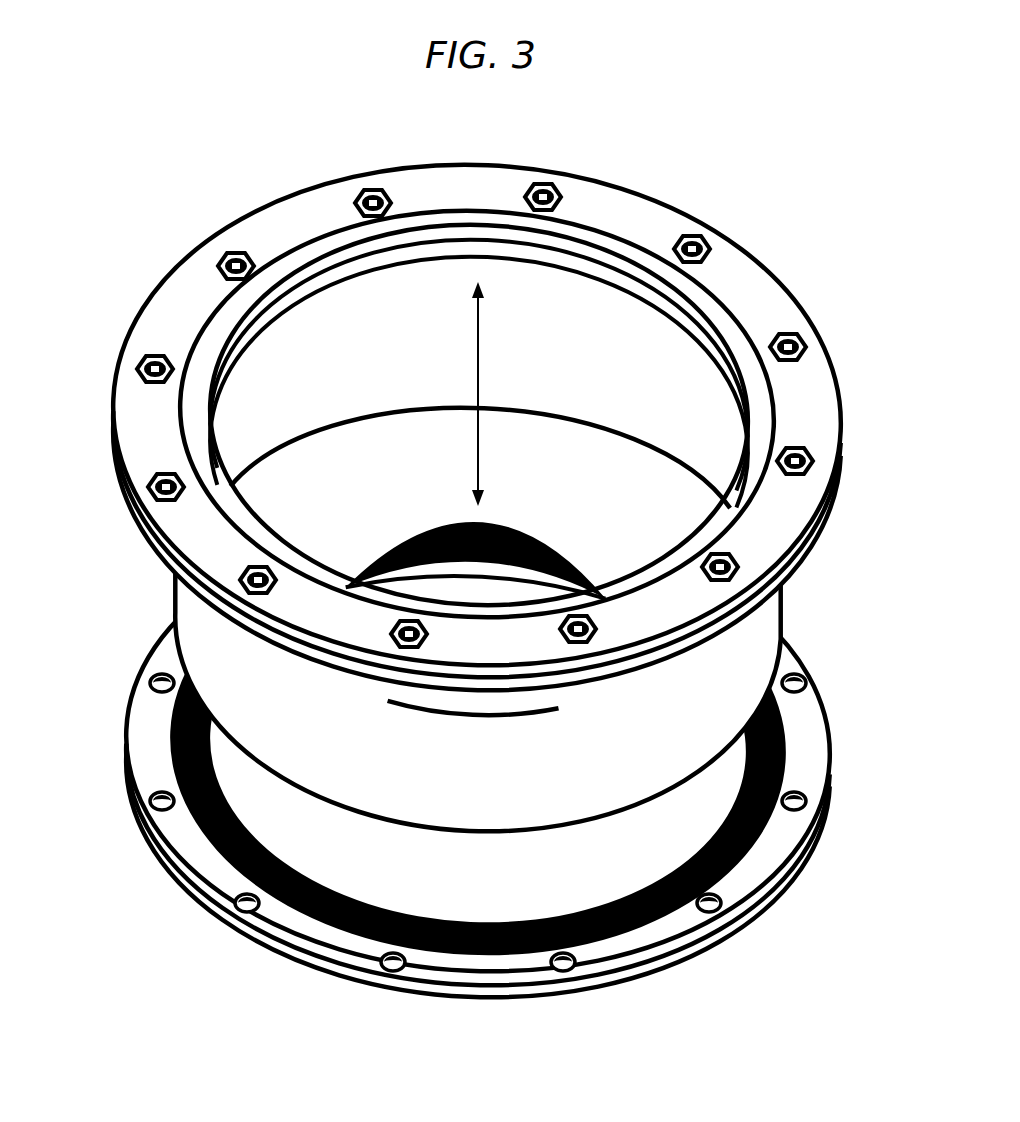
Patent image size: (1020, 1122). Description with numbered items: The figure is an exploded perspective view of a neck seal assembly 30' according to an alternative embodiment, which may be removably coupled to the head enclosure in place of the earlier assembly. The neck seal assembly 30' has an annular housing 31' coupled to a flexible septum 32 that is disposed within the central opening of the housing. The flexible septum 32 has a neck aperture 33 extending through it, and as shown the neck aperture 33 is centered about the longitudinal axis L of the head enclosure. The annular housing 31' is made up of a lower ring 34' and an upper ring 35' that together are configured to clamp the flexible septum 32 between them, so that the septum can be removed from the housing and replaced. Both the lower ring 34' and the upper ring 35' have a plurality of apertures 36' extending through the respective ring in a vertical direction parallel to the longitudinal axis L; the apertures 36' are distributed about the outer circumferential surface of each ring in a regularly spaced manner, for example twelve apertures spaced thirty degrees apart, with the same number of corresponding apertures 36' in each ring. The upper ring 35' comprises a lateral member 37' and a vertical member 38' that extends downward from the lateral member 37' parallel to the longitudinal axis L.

The neck seal assembly 30' is at (473, 566).
The annular housing 31' is at (453, 427).
The flexible septum 32 is at (172, 602).
The neck aperture 33 is at (463, 706).
The lower ring 34' is at (435, 758).
The upper ring 35' is at (405, 414).
The apertures 36' is at (430, 822).
The lateral member 37' is at (528, 415).
The vertical member 38' is at (512, 550).
The longitudinal axis L is at (477, 372).